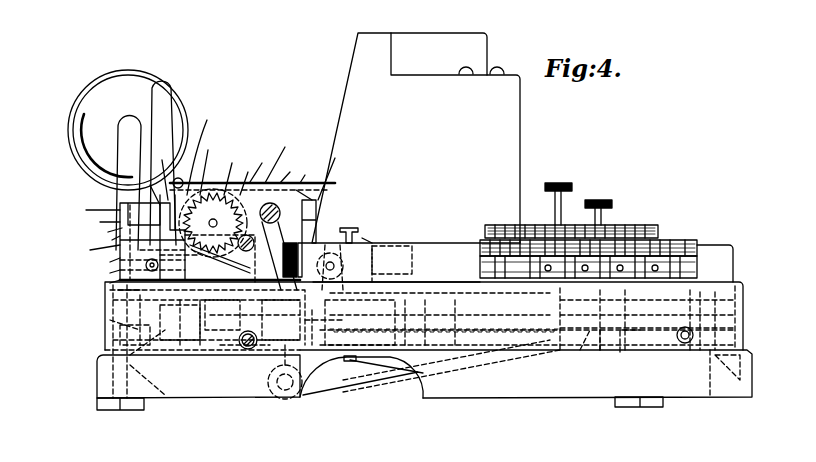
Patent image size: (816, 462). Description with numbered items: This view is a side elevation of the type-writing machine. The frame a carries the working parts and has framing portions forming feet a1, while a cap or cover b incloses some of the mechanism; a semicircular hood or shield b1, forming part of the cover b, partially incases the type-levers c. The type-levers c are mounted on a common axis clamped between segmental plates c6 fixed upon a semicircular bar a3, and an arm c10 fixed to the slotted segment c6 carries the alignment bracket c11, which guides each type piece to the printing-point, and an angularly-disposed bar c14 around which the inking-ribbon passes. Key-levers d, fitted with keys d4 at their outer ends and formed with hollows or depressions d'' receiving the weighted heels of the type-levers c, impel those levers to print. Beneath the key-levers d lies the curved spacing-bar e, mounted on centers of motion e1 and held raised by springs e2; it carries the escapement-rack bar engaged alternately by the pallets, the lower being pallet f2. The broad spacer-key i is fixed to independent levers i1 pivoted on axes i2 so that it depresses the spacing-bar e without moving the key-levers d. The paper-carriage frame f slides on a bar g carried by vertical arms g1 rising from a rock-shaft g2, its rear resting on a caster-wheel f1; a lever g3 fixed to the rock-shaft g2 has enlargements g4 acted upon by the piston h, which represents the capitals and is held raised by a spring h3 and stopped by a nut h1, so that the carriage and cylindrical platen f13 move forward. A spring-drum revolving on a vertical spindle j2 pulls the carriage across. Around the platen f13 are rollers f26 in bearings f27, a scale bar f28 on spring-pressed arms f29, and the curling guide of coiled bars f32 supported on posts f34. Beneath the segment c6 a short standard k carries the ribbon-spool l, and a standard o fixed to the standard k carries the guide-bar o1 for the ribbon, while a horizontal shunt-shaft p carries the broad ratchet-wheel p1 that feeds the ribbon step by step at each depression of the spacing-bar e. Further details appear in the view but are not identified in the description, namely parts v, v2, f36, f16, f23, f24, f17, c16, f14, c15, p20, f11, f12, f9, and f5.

The semicircular hood or shield b1 is at (416, 138).
The cap or cover b is at (416, 262).
The slide v is at (392, 260).
The slide arm v2 is at (385, 248).
The short standard k is at (355, 231).
The ribbon-spool l is at (369, 234).
The semicircular bar a3 is at (318, 222).
The standard o is at (340, 243).
The keys d4 is at (638, 226).
The hollows or depressions d'' is at (588, 238).
The key-levers d is at (588, 281).
The broad spacer-key i is at (715, 263).
The piston for capitals h is at (598, 204).
The independent arms or levers i1 is at (424, 316).
The curved spacing-bar e is at (624, 294).
The vertical spindle j2 is at (350, 372).
The axes or centers of motion i2 is at (382, 322).
The springs h3 is at (520, 340).
The nuts h1 is at (618, 348).
The enlargements g4 is at (590, 355).
The feet a1 is at (160, 395).
The lever g3 is at (249, 341).
The rock-shaft g2 is at (285, 398).
The broad ratchet-wheel p1 is at (294, 360).
The frame a is at (105, 340).
The caster-wheel f1 is at (110, 320).
The lever f36 is at (135, 336).
The springs e2 is at (248, 322).
The lower pallet f2 is at (240, 335).
The horizontal shaft p is at (281, 328).
The carriage frame f is at (206, 241).
The finger f16 is at (124, 190).
The finger f23 is at (163, 163).
The curling guide bars f32 is at (128, 125).
The scale bar f28 is at (201, 153).
The arms f29 is at (159, 172).
The arm f24 is at (150, 188).
The angularly-disposed bar c14 is at (178, 178).
The type-levers c is at (252, 186).
The arm f17 is at (211, 167).
The cylindrical platen f13 is at (230, 171).
The bearings f27 is at (248, 178).
The alignment bracket or projection c11 is at (263, 167).
The arm c10 is at (289, 171).
The guide-bar o1 is at (304, 181).
The segmental or semicircular plates c6 is at (326, 171).
The disk c16 is at (280, 204).
The bar g is at (280, 251).
The vertical arms g1 is at (299, 252).
The ratchet wheel f14 is at (217, 235).
The pin c15 is at (238, 228).
The rod p20 is at (220, 259).
The legs or posts f34 is at (95, 202).
The arm f11 is at (103, 217).
The arm f12 is at (108, 229).
The arm f9 is at (109, 237).
The rollers f26 is at (108, 258).
The arm f5 is at (107, 271).
The centers of motion e1 is at (120, 288).